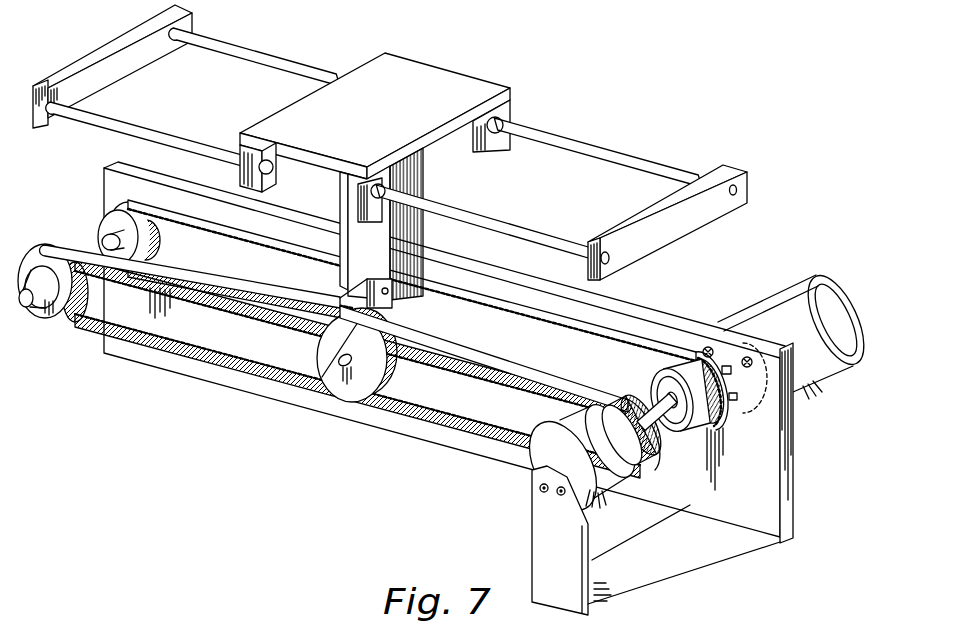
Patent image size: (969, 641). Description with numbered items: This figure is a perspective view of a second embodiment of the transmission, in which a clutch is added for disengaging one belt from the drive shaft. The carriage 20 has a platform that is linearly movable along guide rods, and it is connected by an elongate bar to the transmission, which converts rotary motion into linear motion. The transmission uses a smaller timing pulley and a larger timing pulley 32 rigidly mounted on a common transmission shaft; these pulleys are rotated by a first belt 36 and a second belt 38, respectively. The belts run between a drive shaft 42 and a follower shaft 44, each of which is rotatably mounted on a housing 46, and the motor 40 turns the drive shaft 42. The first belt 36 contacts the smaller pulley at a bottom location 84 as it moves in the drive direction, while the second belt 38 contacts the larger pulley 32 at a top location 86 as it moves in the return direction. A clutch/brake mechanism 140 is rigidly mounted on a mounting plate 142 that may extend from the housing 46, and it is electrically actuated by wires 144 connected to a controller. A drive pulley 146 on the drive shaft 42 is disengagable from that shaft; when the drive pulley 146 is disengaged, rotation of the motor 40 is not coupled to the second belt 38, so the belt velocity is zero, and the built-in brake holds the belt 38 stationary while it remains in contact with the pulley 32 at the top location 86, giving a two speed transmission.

The carriage 20 is at (484, 76).
The larger timing pulley 32 is at (363, 395).
The first belt 36 is at (622, 335).
The second belt 38 is at (485, 443).
The motor 40 is at (820, 323).
The drive shaft 42 is at (652, 394).
The follower shaft 44 is at (110, 241).
The housing 46 is at (773, 477).
The bottom location 84 is at (423, 360).
The top location 86 is at (311, 397).
The clutch/brake mechanism 140 is at (540, 448).
The mounting plate 142 is at (543, 544).
The wires 144 is at (599, 503).
The drive pulley 146 is at (632, 458).